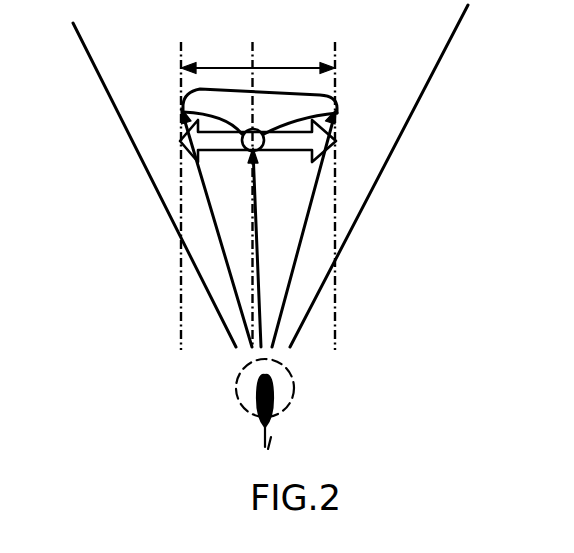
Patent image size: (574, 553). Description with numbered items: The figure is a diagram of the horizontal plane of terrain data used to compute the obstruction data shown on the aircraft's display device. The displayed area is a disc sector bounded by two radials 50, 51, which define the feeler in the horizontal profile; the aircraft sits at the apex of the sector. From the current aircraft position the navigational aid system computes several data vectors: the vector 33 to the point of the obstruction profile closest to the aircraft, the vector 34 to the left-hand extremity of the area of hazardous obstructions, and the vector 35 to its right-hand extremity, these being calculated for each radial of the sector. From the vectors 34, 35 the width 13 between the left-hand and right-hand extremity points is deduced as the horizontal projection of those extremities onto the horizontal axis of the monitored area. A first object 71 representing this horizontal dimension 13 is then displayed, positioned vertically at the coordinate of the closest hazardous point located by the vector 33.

The horizontal dimension 13 is at (301, 66).
The first object 71 is at (338, 150).
The radial 50 is at (397, 141).
The radial 51 is at (133, 143).
The vector 33 is at (258, 283).
The vector 34 is at (212, 217).
The vector 35 is at (297, 250).